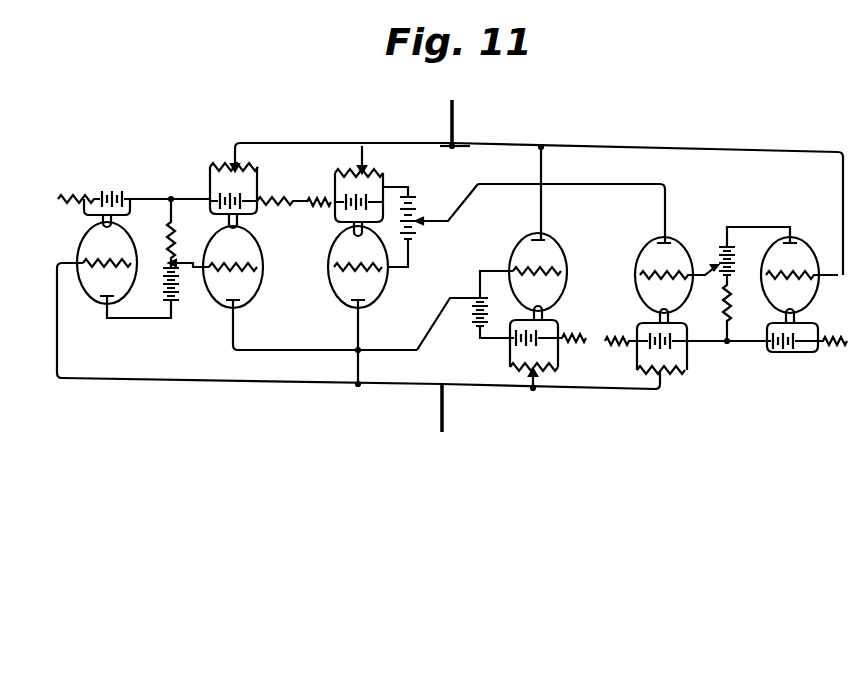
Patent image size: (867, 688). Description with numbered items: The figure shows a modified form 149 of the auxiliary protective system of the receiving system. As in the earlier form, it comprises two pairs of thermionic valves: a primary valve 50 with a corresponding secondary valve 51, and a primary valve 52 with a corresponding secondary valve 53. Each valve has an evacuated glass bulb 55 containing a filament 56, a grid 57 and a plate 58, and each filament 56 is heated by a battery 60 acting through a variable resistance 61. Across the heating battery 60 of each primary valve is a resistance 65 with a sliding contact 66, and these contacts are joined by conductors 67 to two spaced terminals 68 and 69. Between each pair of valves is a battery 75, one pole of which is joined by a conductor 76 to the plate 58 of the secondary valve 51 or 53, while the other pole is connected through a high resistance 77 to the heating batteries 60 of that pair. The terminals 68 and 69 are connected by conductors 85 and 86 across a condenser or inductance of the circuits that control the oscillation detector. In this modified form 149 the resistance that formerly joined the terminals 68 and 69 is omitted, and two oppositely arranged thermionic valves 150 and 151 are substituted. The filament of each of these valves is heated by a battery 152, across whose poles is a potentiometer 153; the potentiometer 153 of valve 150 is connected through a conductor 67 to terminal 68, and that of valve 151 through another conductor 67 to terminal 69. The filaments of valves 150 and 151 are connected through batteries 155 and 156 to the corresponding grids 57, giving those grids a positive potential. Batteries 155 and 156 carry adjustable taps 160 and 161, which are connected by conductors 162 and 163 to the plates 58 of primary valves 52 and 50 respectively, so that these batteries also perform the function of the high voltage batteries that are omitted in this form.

The primary valve 50 is at (247, 267).
The secondary valve 51 is at (78, 255).
The primary valve 52 is at (701, 297).
The secondary valve 53 is at (817, 290).
The glass bulb 55 is at (411, 266).
The filament 56 is at (350, 232).
The grid 57 is at (120, 262).
The plate 58 is at (105, 300).
The heating battery 60 is at (170, 191).
The variable resistance 61 is at (78, 194).
The resistance 65 is at (228, 165).
The sliding contact 66 is at (240, 165).
The conductor 67 is at (322, 144).
The terminal 68 is at (453, 140).
The terminal 69 is at (445, 388).
The battery 75 is at (177, 290).
The conductor 76 is at (136, 320).
The high resistance 77 is at (176, 236).
The conductor 85 is at (453, 108).
The conductor 86 is at (443, 420).
The modified form of auxiliary protective system 149 is at (541, 148).
The thermionic valve 150 is at (378, 267).
The thermionic valve 151 is at (522, 271).
The battery 152 is at (356, 200).
The potentiometer 153 is at (392, 135).
The battery 155 is at (417, 203).
The battery 156 is at (437, 325).
The adjustable tap 160 is at (424, 226).
The adjustable tap 161 is at (468, 296).
The conductor 162 is at (582, 180).
The conductor 163 is at (286, 351).